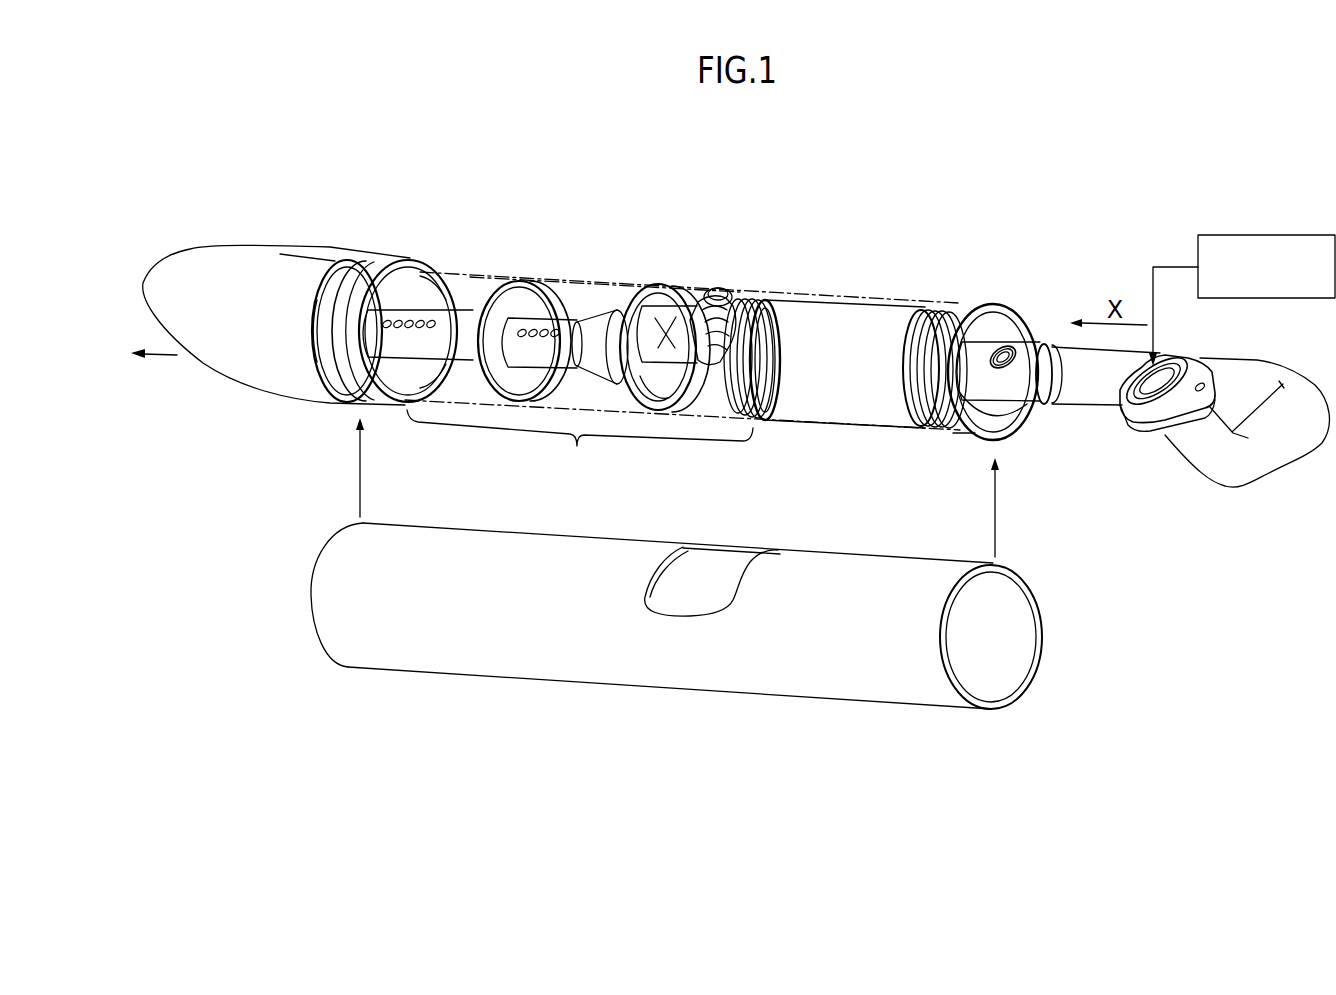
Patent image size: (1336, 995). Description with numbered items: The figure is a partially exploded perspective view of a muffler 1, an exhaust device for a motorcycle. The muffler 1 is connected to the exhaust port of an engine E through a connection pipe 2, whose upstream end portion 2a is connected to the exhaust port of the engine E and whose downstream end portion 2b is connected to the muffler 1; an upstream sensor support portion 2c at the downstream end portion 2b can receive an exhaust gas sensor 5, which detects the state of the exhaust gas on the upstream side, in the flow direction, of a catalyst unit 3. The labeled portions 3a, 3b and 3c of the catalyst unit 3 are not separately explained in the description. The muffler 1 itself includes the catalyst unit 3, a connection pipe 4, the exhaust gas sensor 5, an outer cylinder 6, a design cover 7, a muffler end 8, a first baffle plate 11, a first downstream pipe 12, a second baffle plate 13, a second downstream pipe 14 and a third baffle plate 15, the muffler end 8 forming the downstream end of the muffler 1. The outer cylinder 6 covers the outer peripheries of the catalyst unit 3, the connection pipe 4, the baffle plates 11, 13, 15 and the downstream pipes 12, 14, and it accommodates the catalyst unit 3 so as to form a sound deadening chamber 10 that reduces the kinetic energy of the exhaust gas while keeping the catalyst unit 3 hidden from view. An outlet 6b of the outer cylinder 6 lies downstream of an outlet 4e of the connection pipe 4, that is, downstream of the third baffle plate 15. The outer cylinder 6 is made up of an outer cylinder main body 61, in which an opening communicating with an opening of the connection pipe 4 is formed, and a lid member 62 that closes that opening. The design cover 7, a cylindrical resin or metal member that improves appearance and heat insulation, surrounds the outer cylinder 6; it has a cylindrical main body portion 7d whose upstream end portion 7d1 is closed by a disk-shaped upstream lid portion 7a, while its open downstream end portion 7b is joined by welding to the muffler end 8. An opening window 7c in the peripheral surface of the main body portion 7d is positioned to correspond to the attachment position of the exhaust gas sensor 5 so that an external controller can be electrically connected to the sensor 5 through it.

The muffler 1 is at (498, 183).
The connection pipe 2 is at (1112, 271).
The upstream end portion 2a is at (1143, 427).
The downstream end portion 2b is at (1007, 387).
The upstream sensor support portion 2c is at (1013, 340).
The catalyst unit 3 is at (770, 225).
The catalyst body 3a is at (830, 330).
The downstream end portion 3b is at (913, 343).
The upstream end portion 3c is at (770, 303).
The connection pipe 4 is at (722, 368).
The outlet 4e is at (542, 400).
The exhaust gas sensor 5 is at (706, 287).
The outer cylinder 6 is at (660, 165).
The outlet 6b is at (307, 320).
The outer cylinder main body 61 is at (498, 273).
The lid member 62 is at (647, 283).
The design cover 7 is at (607, 705).
The upstream lid portion 7a is at (960, 433).
The downstream end portion 7b is at (310, 592).
The opening window 7c is at (698, 571).
The main body portion 7d is at (822, 670).
The upstream end portion 7d1 is at (957, 702).
The muffler end 8 is at (243, 277).
The sound deadening chamber 10 is at (580, 442).
The first baffle plate 11 is at (623, 303).
The first downstream pipe 12 is at (567, 327).
The second baffle plate 13 is at (487, 310).
The second downstream pipe 14 is at (447, 327).
The third baffle plate 15 is at (347, 257).
The engine E is at (1277, 233).